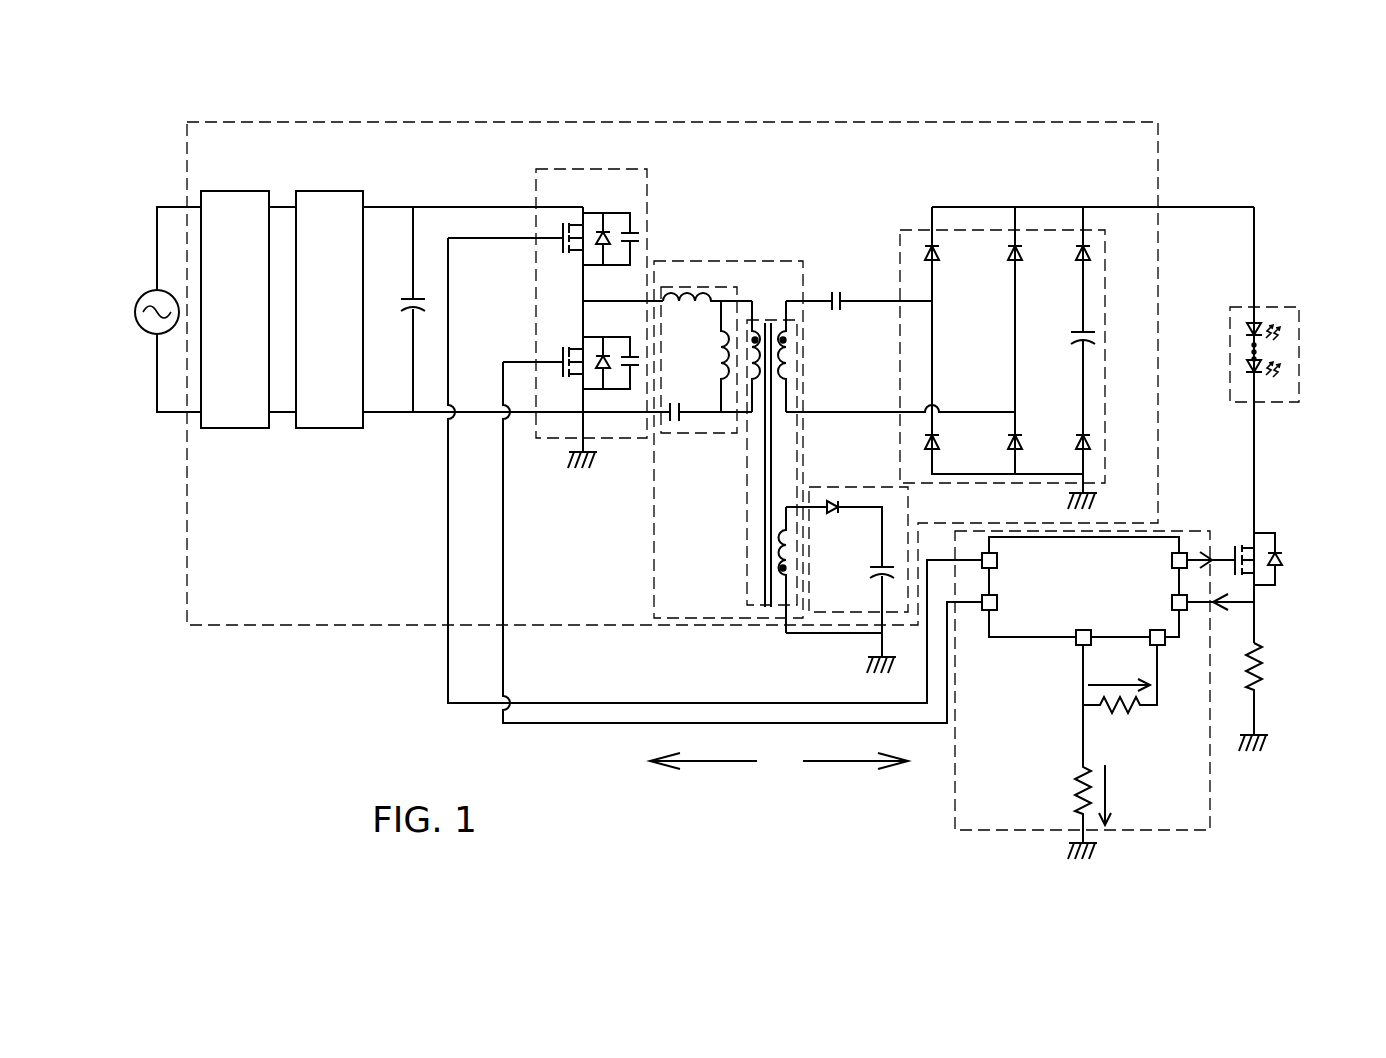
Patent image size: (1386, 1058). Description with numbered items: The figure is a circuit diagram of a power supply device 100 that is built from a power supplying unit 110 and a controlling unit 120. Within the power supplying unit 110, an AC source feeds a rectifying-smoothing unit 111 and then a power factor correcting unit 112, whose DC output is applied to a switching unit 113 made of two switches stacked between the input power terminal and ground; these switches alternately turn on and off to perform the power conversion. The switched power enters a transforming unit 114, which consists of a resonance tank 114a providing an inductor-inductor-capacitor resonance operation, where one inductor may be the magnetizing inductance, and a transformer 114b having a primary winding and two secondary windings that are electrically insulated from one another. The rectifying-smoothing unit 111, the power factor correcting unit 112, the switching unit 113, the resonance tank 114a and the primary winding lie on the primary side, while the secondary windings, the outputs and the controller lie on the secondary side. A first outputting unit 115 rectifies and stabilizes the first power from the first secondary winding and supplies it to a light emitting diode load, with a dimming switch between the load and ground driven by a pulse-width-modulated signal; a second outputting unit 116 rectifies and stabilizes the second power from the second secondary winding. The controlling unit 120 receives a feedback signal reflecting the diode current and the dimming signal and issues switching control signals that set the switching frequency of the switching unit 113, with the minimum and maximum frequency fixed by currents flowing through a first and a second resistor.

The power supply device 100 is at (743, 449).
The power supplying unit 110 is at (255, 625).
The rectifying-smoothing unit 111 is at (231, 428).
The power factor correcting unit 112 is at (325, 428).
The switching unit 113 is at (548, 438).
The transforming unit 114 is at (745, 261).
The resonance tank 114a is at (695, 433).
The transformer 114b is at (747, 556).
The first outputting unit 115 is at (915, 230).
The second outputting unit 116 is at (826, 488).
The controlling unit 120 is at (1210, 800).